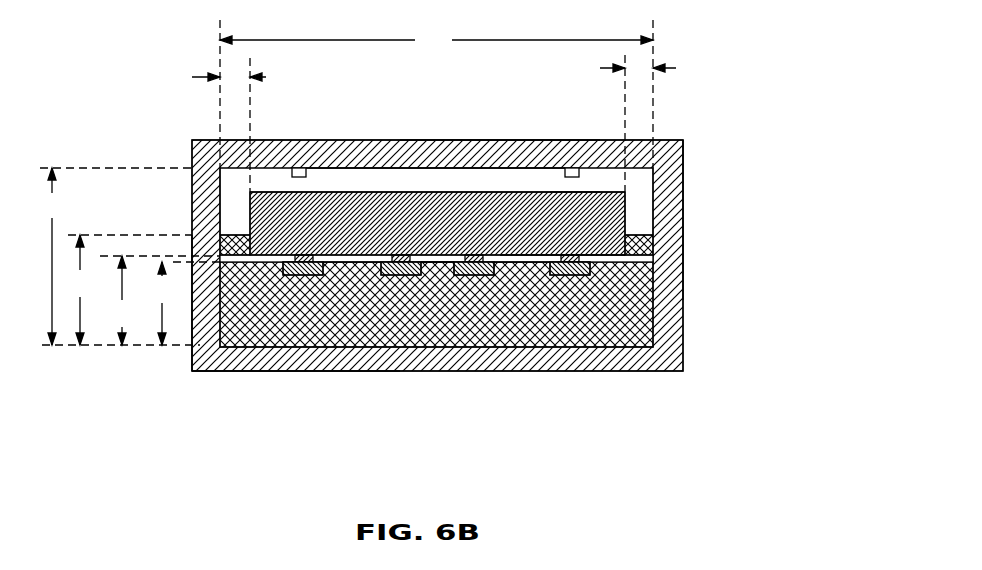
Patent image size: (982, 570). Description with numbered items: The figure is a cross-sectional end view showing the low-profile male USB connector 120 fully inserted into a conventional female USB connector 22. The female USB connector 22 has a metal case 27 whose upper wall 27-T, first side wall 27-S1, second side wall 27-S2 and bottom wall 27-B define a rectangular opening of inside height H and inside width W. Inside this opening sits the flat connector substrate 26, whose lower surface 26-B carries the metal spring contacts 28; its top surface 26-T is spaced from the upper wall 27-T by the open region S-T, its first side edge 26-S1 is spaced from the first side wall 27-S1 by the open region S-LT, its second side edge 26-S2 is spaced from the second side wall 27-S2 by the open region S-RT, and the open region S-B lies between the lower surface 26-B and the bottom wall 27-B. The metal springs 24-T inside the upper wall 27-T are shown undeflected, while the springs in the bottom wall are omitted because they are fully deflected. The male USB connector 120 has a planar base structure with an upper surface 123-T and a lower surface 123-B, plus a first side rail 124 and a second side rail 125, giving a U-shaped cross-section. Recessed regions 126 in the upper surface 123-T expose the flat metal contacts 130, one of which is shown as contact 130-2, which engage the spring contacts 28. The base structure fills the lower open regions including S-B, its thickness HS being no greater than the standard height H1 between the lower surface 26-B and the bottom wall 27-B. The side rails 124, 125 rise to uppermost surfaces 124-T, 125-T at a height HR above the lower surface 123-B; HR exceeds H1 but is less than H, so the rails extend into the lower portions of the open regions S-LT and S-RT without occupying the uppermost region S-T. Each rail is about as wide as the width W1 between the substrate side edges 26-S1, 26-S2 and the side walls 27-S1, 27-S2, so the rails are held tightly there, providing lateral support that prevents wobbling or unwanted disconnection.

The female USB connector 22 is at (647, 385).
The metal springs 24-T is at (300, 170).
The connector substrate 26 is at (296, 232).
The first side edge 26-S1 is at (249, 186).
The second side edge 26-S2 is at (638, 207).
The top surface 26-T is at (600, 192).
The lower surface 26-B is at (545, 258).
The metal case 27 is at (688, 354).
The upper wall 27-T is at (492, 146).
The bottom wall 27-B is at (240, 372).
The first side wall 27-S1 is at (200, 325).
The second side wall 27-S2 is at (683, 190).
The metal spring contacts 28 is at (472, 255).
The male USB connector 120 is at (284, 337).
The upper surface 123-T is at (545, 192).
The lower surface 123-B is at (435, 272).
The first side rail 124 is at (222, 243).
The uppermost surface 124-T is at (220, 196).
The second side rail 125 is at (654, 248).
The uppermost surface 125-T is at (655, 234).
The recessed regions 126 is at (349, 270).
The metal contacts 130 is at (310, 277).
The second contact pad 130-2 is at (419, 270).
The open region S-T is at (480, 175).
The open region S-B is at (437, 192).
The open region S-LT is at (233, 202).
The open region S-RT is at (683, 162).
The inside width W is at (436, 42).
The width W1 is at (452, 73).
The inside height H is at (50, 256).
The height HR is at (84, 290).
The standard height H1 is at (122, 300).
The thickness HS is at (162, 303).